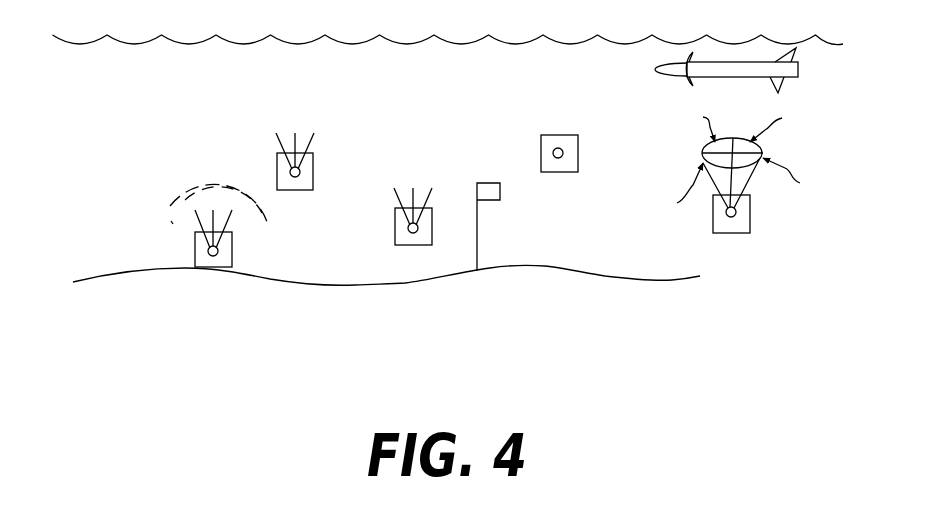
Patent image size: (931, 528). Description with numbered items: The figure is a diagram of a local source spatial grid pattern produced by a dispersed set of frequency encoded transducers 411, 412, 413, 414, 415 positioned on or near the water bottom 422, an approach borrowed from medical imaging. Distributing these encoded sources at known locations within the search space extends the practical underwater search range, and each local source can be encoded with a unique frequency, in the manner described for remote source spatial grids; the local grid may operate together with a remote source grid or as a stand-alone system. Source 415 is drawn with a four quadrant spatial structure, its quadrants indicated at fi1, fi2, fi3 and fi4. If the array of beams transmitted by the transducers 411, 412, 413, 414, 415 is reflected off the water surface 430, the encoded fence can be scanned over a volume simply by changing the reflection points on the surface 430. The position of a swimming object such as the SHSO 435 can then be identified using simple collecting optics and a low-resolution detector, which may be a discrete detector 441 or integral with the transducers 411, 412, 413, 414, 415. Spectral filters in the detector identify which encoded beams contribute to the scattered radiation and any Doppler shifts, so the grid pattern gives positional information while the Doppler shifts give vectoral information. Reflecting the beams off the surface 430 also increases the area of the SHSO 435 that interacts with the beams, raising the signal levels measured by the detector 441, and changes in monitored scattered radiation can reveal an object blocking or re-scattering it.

The frequency encoded transducer 411 is at (195, 255).
The frequency encoded transducer 412 is at (305, 190).
The frequency encoded transducer 413 is at (405, 245).
The frequency encoded transducer 414 is at (578, 150).
The source 415 is at (735, 200).
The water bottom 422 is at (605, 275).
The water surface 430 is at (415, 42).
The SHSO 435 is at (742, 64).
The discrete detector 441 is at (497, 183).
The quadrant of four quadrant spatial structure fi1 is at (795, 176).
The quadrant of four quadrant spatial structure fi2 is at (780, 123).
The quadrant of four quadrant spatial structure fi3 is at (695, 123).
The quadrant of four quadrant spatial structure fi4 is at (673, 190).